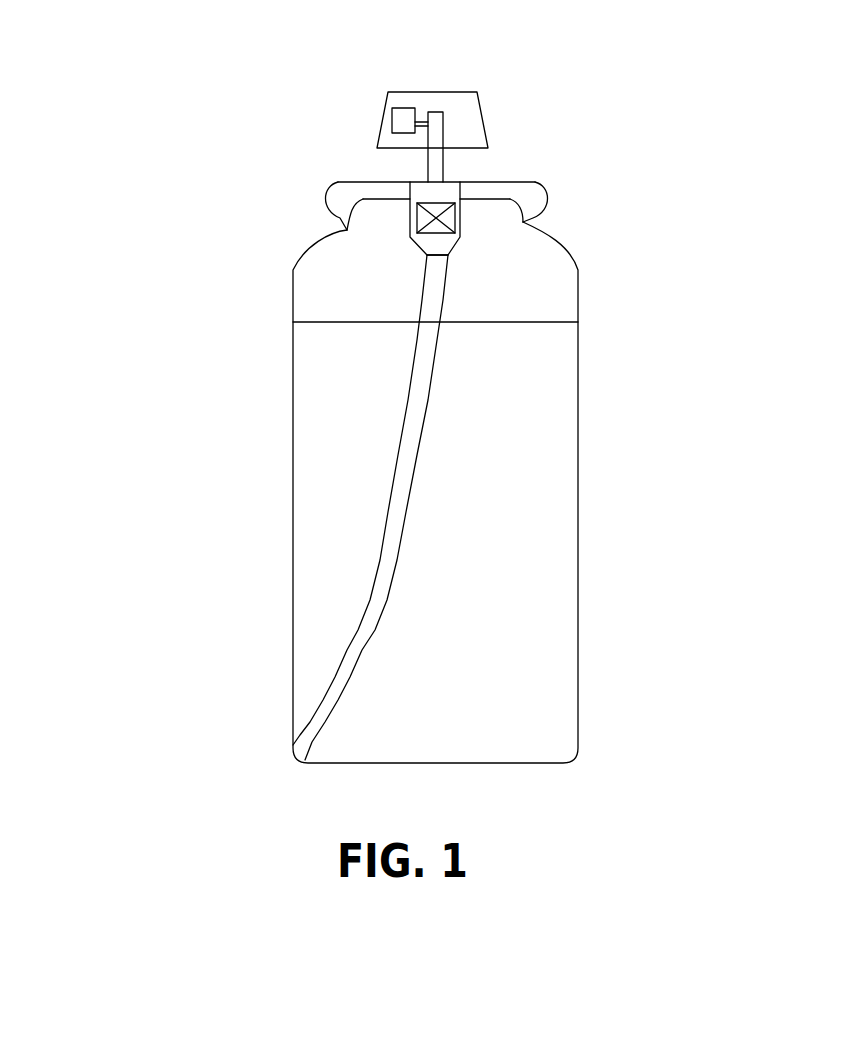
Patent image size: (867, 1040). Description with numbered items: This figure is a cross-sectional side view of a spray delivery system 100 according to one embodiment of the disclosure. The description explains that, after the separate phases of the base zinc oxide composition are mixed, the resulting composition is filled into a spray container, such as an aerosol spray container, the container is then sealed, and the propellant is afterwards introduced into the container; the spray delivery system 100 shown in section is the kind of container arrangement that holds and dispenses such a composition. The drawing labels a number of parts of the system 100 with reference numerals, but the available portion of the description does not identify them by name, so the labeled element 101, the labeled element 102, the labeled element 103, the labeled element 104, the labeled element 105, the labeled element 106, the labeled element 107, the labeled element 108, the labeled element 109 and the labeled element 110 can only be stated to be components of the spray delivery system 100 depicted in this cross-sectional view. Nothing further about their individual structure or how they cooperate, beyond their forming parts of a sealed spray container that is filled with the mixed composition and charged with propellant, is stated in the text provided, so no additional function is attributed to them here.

The dispensing system 100 is at (196, 194).
The container 101 is at (293, 423).
The actuator cap 102 is at (447, 107).
The mounting cup 103 is at (538, 187).
The mounting plate 104 is at (485, 188).
The valve 105 is at (447, 220).
The valve housing 106 is at (427, 197).
The nozzle 107 is at (397, 122).
The valve stem 108 is at (430, 163).
The dip tube 109 is at (377, 573).
The composition 110 is at (502, 390).